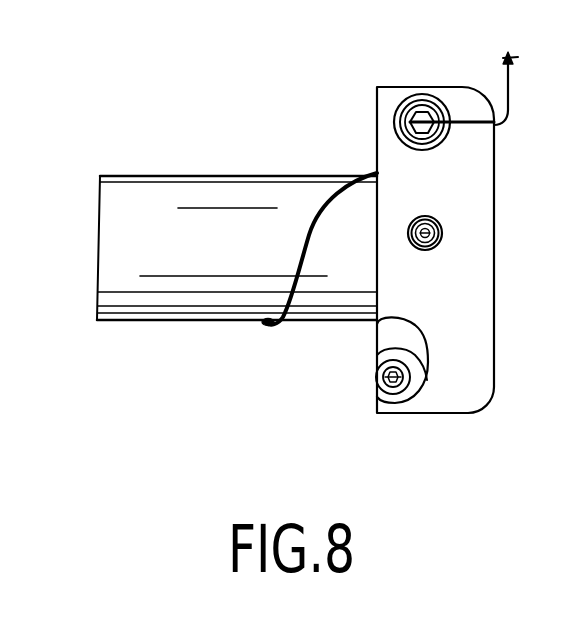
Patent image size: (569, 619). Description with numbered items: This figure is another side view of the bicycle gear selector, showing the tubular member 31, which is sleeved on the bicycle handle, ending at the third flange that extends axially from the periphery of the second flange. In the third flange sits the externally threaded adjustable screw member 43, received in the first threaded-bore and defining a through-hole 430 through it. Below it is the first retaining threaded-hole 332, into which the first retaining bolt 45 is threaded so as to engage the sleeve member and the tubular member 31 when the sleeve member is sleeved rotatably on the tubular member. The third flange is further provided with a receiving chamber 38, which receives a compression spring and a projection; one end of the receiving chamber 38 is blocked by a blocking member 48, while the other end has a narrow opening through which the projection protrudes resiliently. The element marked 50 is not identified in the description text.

The tubular member 31 is at (140, 173).
The adjustable screw member 43 is at (410, 108).
The through-hole 430 is at (422, 112).
The hook / direction arrow 50 is at (510, 83).
The first retaining threaded-hole 332 is at (435, 217).
The first retaining bolt 45 is at (427, 248).
The receiving chamber 38 is at (413, 338).
The blocking member 48 is at (393, 385).